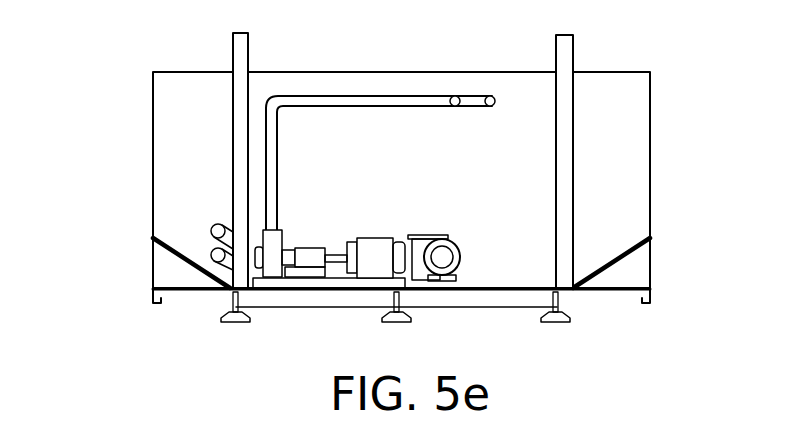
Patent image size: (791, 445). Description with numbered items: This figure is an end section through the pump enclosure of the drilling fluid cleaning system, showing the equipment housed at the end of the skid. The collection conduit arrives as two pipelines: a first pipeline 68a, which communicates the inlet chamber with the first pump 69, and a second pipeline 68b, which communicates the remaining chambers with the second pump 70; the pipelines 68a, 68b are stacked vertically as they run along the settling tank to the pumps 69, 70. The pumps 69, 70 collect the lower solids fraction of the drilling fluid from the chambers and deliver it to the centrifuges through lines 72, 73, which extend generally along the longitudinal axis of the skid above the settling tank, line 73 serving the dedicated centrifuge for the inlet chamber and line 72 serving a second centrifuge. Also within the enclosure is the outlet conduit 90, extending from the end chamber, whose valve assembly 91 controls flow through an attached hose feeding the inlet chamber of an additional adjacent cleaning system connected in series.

The first pipeline 68a is at (213, 249).
The second pipeline 68b is at (214, 224).
The first pump 69 is at (364, 221).
The second pump 70 is at (377, 238).
The line 72 is at (358, 98).
The line 73 is at (473, 97).
The outlet conduit 90 is at (465, 250).
The valve assembly 91 is at (452, 222).